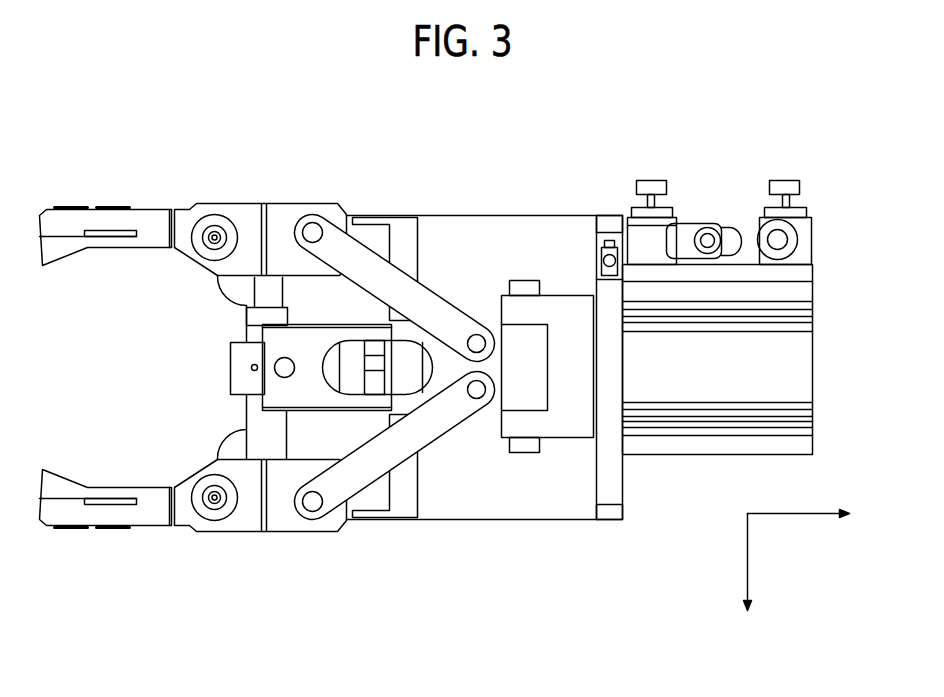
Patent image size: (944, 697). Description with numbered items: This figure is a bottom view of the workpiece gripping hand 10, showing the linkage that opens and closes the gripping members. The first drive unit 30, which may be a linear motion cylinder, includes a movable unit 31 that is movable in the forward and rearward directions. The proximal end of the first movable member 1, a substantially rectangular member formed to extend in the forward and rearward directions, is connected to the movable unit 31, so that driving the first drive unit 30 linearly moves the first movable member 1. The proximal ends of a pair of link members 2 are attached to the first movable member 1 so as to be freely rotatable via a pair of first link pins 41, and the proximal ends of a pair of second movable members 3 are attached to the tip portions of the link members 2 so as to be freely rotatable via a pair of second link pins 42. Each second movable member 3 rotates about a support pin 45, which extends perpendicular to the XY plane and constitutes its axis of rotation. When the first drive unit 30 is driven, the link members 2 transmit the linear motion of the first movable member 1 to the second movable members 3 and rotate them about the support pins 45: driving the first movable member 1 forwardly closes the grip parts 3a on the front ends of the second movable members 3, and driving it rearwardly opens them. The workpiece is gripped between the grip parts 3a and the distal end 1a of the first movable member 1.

The first movable member 1 is at (443, 367).
The distal end of the first movable member 1a is at (238, 384).
The link member 2 is at (358, 257).
The second movable member 3 is at (204, 206).
The grip part 3a is at (73, 262).
The workpiece gripping hand 10 is at (800, 154).
The first drive unit 30 is at (815, 393).
The movable unit 31 is at (570, 322).
The first link pin 41 is at (482, 333).
The second link pin 42 is at (315, 234).
The support pin 45 is at (209, 238).